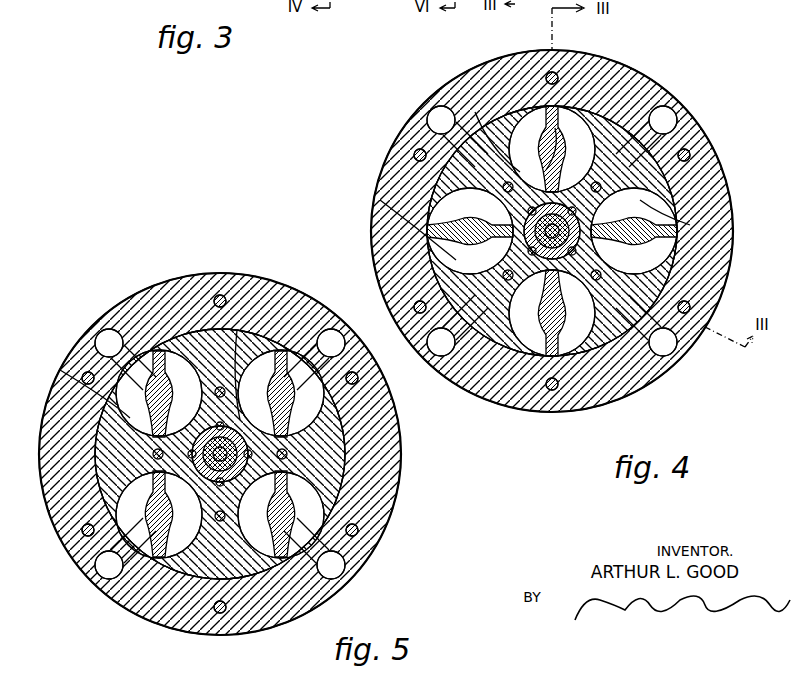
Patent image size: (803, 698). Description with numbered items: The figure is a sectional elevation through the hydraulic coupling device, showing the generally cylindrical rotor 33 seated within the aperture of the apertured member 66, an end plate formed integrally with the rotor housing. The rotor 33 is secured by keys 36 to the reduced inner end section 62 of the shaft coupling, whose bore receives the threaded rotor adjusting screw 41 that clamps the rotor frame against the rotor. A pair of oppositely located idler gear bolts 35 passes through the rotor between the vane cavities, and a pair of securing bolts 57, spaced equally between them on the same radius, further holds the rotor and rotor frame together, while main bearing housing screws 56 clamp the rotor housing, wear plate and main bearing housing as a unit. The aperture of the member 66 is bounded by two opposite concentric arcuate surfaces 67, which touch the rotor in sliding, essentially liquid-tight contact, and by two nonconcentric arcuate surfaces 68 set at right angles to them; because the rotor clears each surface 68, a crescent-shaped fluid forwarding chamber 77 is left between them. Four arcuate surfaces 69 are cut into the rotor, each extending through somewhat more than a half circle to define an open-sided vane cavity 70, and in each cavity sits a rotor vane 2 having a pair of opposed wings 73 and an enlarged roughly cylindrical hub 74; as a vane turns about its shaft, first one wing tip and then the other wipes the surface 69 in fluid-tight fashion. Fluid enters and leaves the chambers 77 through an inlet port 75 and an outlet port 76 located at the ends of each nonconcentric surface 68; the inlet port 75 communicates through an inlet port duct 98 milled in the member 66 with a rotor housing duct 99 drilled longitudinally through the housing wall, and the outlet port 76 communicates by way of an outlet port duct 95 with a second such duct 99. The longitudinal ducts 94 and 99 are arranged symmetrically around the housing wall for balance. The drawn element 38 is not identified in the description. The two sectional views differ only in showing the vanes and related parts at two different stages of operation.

In FIG. 4, the rotor vane 2 is at (579, 140).
In FIG. 5, the rotor vane 2 is at (292, 370).
In FIG. 4, the rotor 33 is at (485, 100).
In FIG. 5, the rotor 33 is at (236, 276).
In FIG. 4, the idler gear bolt 35 is at (605, 262).
In FIG. 5, the idler gear bolt 35 is at (226, 517).
In FIG. 4, the key 36 is at (573, 200).
In FIG. 5, the key 36 is at (200, 462).
In FIG. 5, the shaft 38 is at (205, 440).
In FIG. 4, the rotor adjusting screw 41 is at (552, 231).
In FIG. 5, the rotor adjusting screw 41 is at (238, 430).
In FIG. 4, the main bearing housing screw 56 is at (559, 76).
In FIG. 5, the main bearing housing screw 56 is at (218, 297).
In FIG. 4, the securing bolt 57 is at (647, 182).
In FIG. 5, the securing bolt 57 is at (295, 470).
In FIG. 5, the inner end section 62 is at (280, 480).
In FIG. 4, the apertured member 66 is at (665, 211).
In FIG. 5, the apertured member 66 is at (333, 451).
In FIG. 4, the concentric arcuate surface 67 is at (603, 186).
In FIG. 5, the concentric arcuate surface 67 is at (415, 446).
In FIG. 4, the nonconcentric arcuate surface 68 is at (537, 108).
In FIG. 5, the nonconcentric arcuate surface 68 is at (189, 341).
In FIG. 4, the arcuate surface 69 is at (528, 177).
In FIG. 5, the arcuate surface 69 is at (243, 382).
In FIG. 4, the vane cavity 70 is at (477, 148).
In FIG. 5, the vane cavity 70 is at (326, 421).
In FIG. 4, the wing 73 is at (558, 116).
In FIG. 5, the wing 73 is at (273, 362).
In FIG. 4, the hub 74 is at (562, 142).
In FIG. 5, the hub 74 is at (294, 372).
In FIG. 4, the inlet port 75 is at (627, 143).
In FIG. 5, the inlet port 75 is at (300, 398).
In FIG. 4, the outlet port 76 is at (458, 175).
In FIG. 5, the outlet port 76 is at (135, 400).
In FIG. 5, the fluid forwarding chamber 77 is at (238, 332).
In FIG. 4, the duct 94 is at (440, 118).
In FIG. 5, the duct 94 is at (108, 338).
In FIG. 4, the outlet port duct 95 is at (448, 143).
In FIG. 5, the outlet port duct 95 is at (132, 350).
In FIG. 4, the inlet port duct 98 is at (655, 103).
In FIG. 5, the inlet port duct 98 is at (312, 336).
In FIG. 4, the rotor housing duct 99 is at (666, 122).
In FIG. 5, the rotor housing duct 99 is at (331, 332).